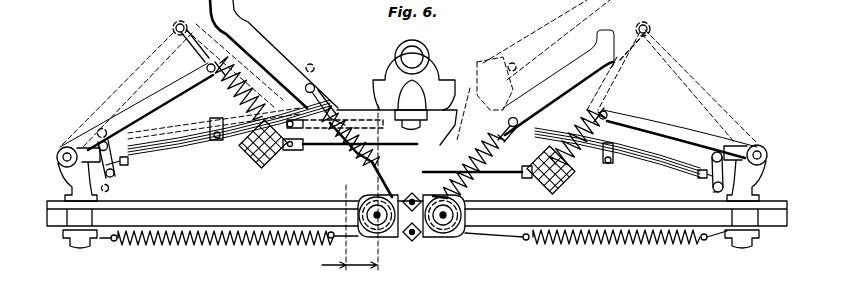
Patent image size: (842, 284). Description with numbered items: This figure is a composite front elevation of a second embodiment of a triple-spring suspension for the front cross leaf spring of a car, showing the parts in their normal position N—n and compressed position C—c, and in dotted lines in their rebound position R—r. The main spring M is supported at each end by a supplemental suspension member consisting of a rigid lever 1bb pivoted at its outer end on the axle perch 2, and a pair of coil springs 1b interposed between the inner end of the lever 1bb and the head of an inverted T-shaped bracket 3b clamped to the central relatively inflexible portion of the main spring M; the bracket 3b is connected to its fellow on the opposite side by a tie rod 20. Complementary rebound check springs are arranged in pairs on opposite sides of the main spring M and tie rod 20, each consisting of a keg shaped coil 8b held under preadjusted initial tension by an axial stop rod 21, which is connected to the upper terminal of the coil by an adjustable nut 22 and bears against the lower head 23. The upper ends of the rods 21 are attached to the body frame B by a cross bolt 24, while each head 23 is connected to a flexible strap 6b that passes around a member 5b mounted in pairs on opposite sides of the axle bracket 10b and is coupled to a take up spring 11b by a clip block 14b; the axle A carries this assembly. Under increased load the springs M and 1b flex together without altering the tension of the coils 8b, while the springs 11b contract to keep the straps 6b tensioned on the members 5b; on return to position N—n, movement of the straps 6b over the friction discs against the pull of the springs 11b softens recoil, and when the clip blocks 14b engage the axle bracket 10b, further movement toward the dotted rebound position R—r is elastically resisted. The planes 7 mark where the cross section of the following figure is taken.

The base rail A is at (417, 224).
The axle perch 2 is at (78, 180).
The take up spring 11b is at (270, 230).
The clip block 14b is at (335, 230).
The member (disc and friction washer assembly) 5b is at (393, 237).
The axle bracket 10b is at (425, 238).
The rigid lever 1bb is at (122, 125).
The normal load position n is at (205, 67).
The rebound position r is at (175, 27).
The coil spring 1b is at (220, 103).
The inverted T-shaped bracket 3b is at (247, 157).
The main spring M is at (182, 142).
The compressed position c is at (110, 188).
The compressed position C is at (712, 188).
The frame bracket B is at (432, 46).
The rebound position R is at (487, 78).
The normal load position N is at (463, 102).
The cross bolt 24 is at (310, 84).
The axial stop rod 21 is at (328, 112).
The adjustable nut 22 is at (342, 112).
The keg shaped coil 8b is at (358, 135).
The lower head 23 is at (350, 163).
The flexible strap 6b is at (388, 188).
The tie rod 20 is at (403, 146).
The section plane 7 is at (344, 188).